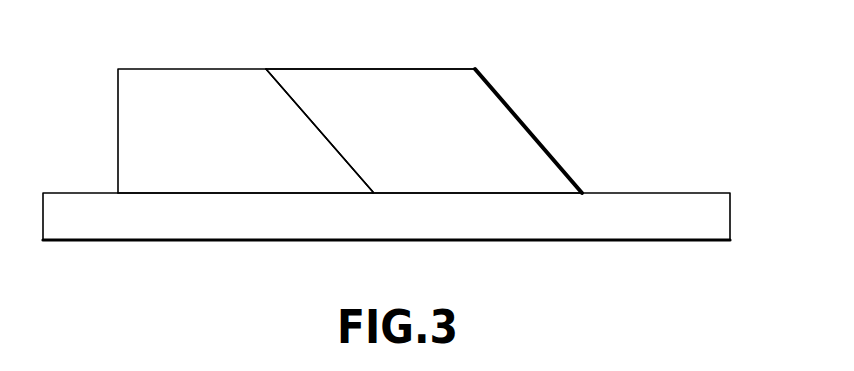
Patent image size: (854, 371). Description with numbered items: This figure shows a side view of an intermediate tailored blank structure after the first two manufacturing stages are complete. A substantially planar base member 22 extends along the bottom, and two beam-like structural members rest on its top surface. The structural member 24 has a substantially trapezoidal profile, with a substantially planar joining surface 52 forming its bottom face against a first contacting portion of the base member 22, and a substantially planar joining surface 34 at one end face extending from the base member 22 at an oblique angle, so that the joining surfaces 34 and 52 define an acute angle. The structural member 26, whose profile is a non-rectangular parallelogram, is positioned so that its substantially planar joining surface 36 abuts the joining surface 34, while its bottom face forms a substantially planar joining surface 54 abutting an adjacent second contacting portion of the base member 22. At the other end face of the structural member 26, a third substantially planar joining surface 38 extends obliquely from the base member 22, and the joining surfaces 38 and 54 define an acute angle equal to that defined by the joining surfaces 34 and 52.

The base member 22 is at (655, 193).
The structural member 24 is at (158, 73).
The structural member 26 is at (395, 75).
The joining surface 34 is at (345, 155).
The joining surface 36 is at (313, 125).
The joining surface 38 is at (528, 127).
The joining surface 52 is at (197, 193).
The joining surface 54 is at (533, 194).